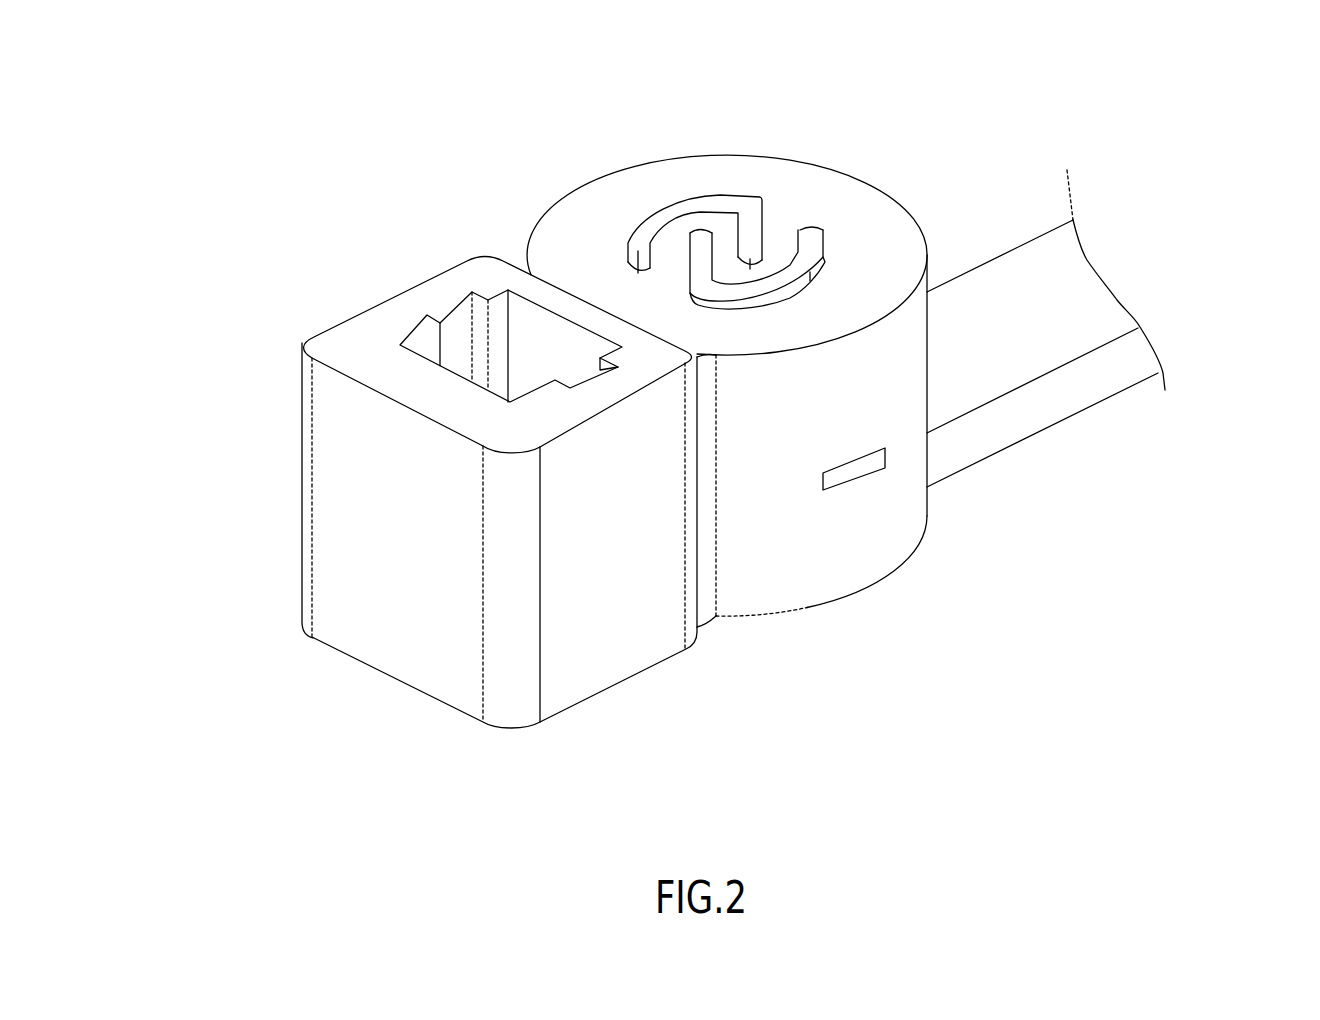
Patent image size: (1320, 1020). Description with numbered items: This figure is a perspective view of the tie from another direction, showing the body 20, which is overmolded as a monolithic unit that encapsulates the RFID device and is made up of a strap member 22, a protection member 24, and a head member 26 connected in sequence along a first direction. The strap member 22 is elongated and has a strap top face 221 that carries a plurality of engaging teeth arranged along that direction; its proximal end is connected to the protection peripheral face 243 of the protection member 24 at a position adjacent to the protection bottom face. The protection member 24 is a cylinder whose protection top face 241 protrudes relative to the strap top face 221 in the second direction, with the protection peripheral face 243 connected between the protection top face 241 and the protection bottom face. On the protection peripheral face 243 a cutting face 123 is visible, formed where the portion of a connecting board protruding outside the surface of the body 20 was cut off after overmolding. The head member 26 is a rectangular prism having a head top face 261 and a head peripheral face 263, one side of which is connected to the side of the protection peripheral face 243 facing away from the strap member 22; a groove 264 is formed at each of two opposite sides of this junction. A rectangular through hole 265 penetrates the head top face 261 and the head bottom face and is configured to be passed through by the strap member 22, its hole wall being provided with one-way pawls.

The body 20 is at (255, 165).
The strap member 22 is at (1062, 243).
The strap top face 221 is at (1008, 293).
The protection member 24 is at (655, 163).
The protection top face 241 is at (842, 197).
The protection peripheral face 243 is at (900, 405).
The cutting face 123 is at (852, 470).
The head member 26 is at (310, 333).
The head top face 261 is at (541, 291).
The head peripheral face 263 is at (353, 515).
The groove 264 is at (697, 488).
The through hole 265 is at (553, 313).